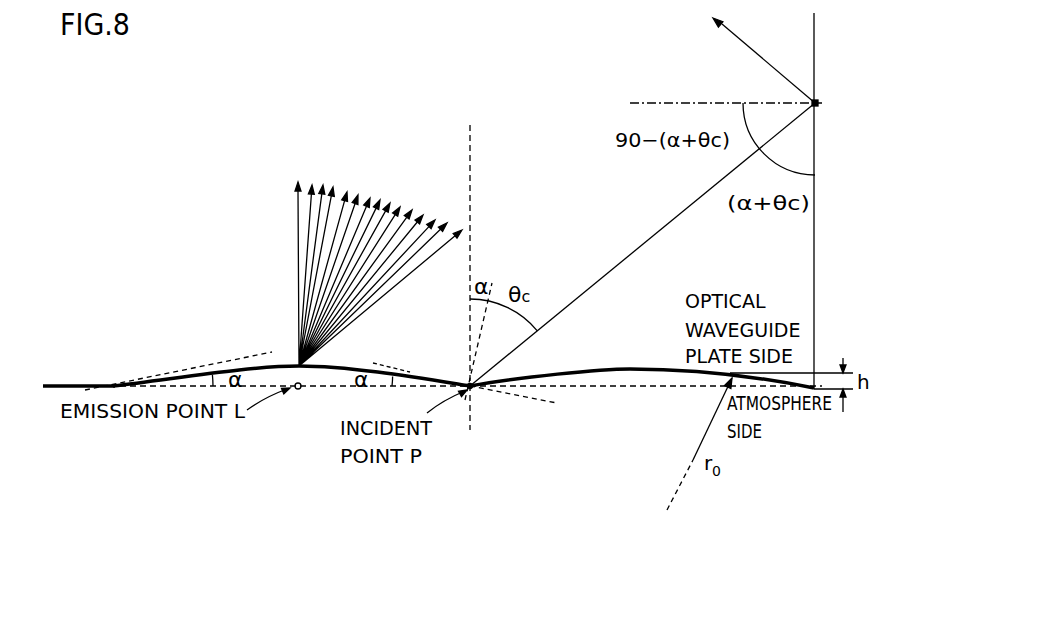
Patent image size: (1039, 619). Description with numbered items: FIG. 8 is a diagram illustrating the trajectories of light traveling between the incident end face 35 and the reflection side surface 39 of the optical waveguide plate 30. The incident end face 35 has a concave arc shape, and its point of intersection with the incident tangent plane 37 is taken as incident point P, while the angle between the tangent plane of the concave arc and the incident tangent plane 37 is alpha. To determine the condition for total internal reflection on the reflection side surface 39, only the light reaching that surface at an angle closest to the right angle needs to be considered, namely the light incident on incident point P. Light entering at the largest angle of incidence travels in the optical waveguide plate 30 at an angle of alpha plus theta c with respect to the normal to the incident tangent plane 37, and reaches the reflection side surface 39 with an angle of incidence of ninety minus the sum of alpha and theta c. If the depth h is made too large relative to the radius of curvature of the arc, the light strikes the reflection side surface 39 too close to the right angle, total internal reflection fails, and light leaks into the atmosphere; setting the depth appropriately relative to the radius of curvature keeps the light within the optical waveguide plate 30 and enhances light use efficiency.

The optical waveguide plate 30 is at (800, 238).
The incident end face 35 is at (163, 373).
The incident tangent plane 37 is at (107, 383).
The reflection side surface 39 is at (817, 288).